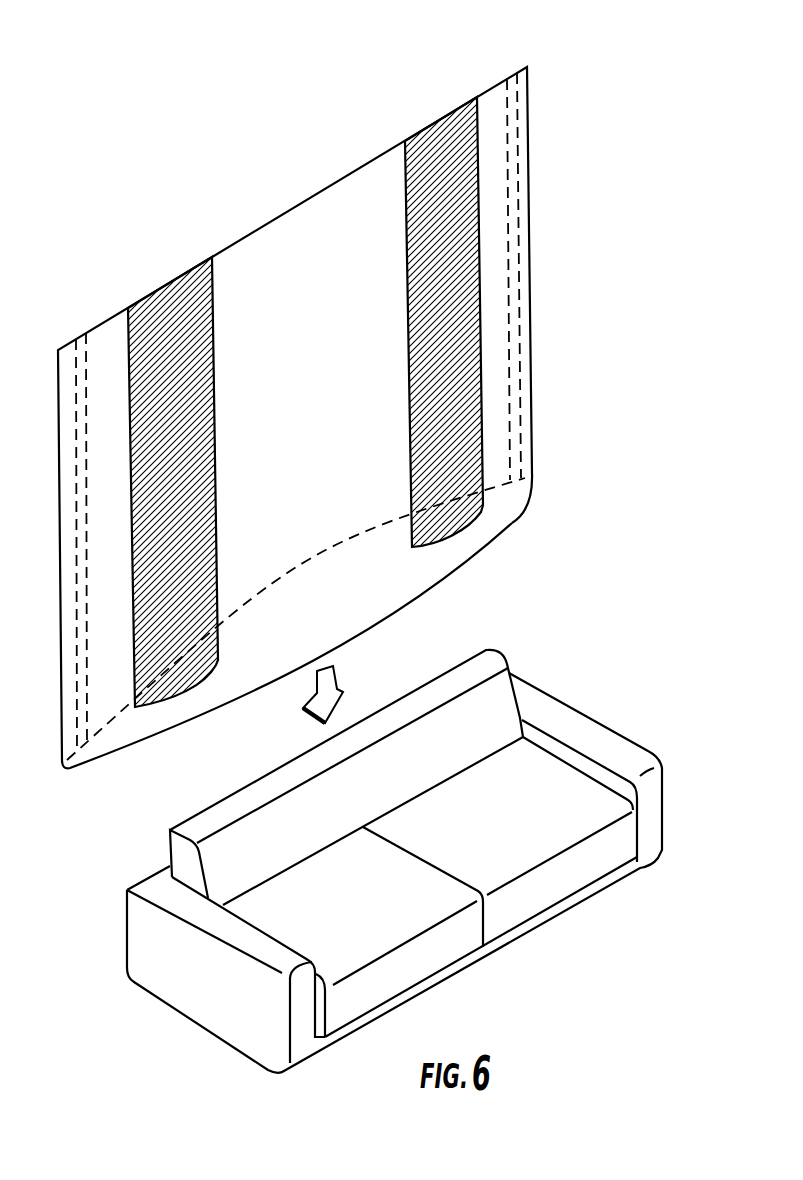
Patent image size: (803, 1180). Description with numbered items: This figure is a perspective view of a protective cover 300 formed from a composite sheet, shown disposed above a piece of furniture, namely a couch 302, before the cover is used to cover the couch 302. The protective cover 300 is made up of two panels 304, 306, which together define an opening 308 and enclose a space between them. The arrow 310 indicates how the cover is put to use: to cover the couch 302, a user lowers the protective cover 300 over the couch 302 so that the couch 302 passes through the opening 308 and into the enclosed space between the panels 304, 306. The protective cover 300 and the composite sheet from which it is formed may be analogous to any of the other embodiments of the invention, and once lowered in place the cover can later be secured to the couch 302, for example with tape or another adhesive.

The protective cover 300 is at (581, 156).
The couch 302 is at (593, 737).
The panel 304 is at (492, 528).
The panel 306 is at (308, 538).
The opening 308 is at (320, 631).
The arrow 310 is at (330, 684).